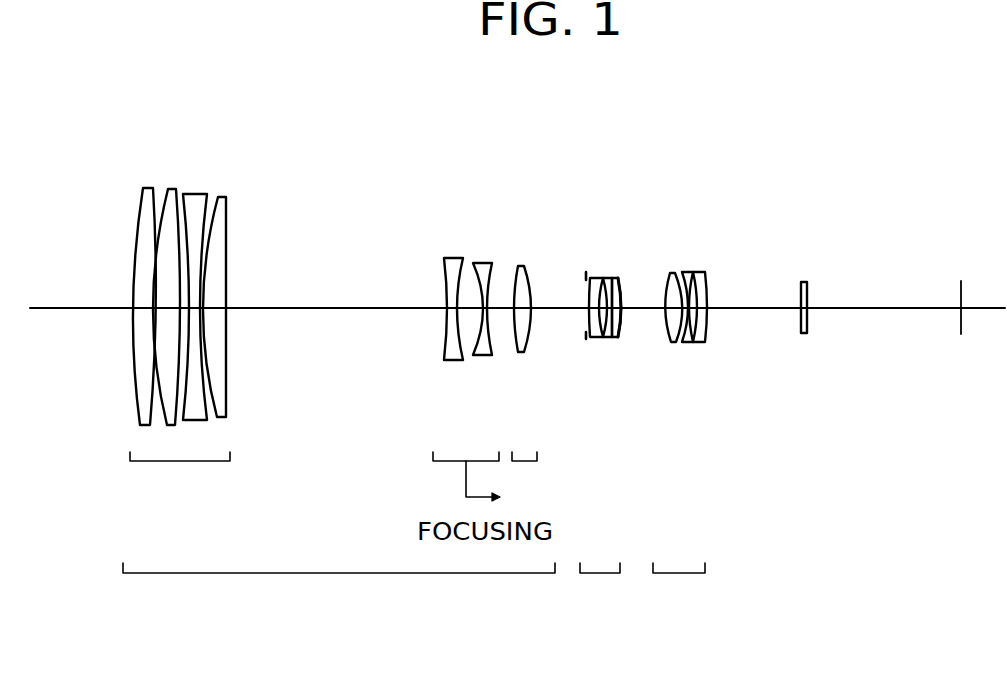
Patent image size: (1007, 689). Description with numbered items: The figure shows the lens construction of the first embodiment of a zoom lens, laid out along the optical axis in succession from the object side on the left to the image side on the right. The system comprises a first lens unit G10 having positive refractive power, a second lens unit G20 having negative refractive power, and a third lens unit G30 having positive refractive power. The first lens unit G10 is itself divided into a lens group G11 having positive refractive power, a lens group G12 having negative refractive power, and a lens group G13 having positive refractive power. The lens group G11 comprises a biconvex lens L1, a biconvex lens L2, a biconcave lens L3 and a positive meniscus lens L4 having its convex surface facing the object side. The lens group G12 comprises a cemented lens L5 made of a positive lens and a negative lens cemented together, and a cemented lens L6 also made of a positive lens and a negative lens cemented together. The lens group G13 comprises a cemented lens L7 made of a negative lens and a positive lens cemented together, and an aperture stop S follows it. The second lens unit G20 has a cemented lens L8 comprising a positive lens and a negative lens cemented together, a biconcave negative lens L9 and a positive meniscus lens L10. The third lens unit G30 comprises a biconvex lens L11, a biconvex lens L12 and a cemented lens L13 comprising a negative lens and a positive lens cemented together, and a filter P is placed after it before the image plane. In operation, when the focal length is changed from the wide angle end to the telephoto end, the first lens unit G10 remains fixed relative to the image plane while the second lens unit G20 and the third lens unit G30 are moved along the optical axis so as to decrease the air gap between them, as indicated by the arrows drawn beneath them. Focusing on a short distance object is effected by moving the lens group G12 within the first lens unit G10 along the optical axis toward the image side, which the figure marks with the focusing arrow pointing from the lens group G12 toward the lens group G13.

The biconvex lens L1 is at (147, 188).
The biconvex lens L2 is at (172, 189).
The biconcave lens L3 is at (197, 194).
The positive meniscus lens L4 is at (223, 197).
The cemented lens L5 is at (465, 235).
The cemented lens L6 is at (502, 235).
The cemented lens L7 is at (537, 235).
The cemented lens L8 is at (617, 235).
The biconcave negative lens L9 is at (608, 277).
The positive meniscus lens L10 is at (619, 276).
The biconvex lens L11 is at (669, 273).
The biconvex lens L12 is at (683, 272).
The cemented lens L13 is at (722, 261).
The aperture stop S is at (585, 272).
The filter P is at (807, 282).
The first lens unit G10 is at (333, 666).
The lens group G11 is at (180, 474).
The lens group G12 is at (459, 480).
The lens group G13 is at (526, 480).
The second lens unit G20 is at (625, 639).
The third lens unit G30 is at (678, 583).